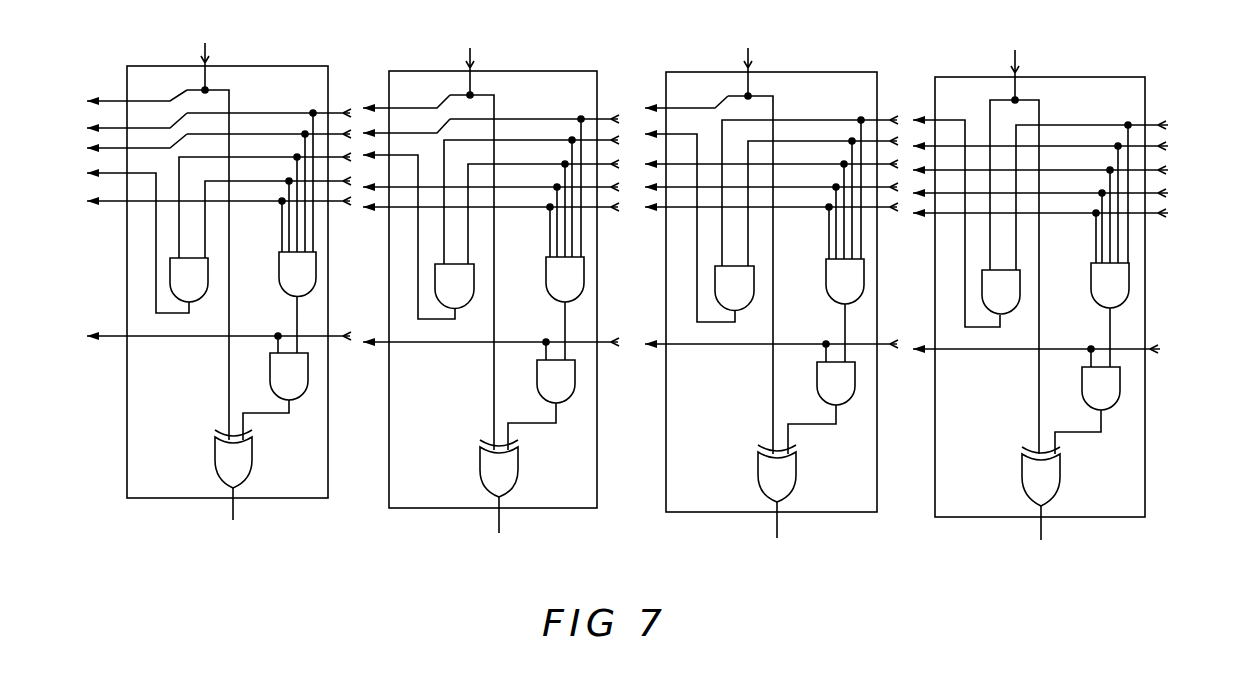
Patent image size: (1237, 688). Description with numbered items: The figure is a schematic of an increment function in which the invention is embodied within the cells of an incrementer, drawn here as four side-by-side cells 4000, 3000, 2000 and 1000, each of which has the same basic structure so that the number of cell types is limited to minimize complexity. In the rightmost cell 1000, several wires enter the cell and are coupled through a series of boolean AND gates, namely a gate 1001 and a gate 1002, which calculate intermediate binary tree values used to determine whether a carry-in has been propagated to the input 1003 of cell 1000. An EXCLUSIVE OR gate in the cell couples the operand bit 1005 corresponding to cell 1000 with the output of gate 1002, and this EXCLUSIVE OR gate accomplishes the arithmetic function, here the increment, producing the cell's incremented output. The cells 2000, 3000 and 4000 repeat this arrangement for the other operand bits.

The fourth bit incrementer stage 4000 is at (200, 498).
The third bit incrementer stage 3000 is at (462, 508).
The second bit incrementer stage 2000 is at (740, 512).
The cell 1000 is at (1005, 517).
The AND gate 1001 is at (1102, 309).
The AND gate 1002 is at (1110, 412).
The input 1003 is at (1160, 351).
The operand bit 1005 is at (1029, 47).